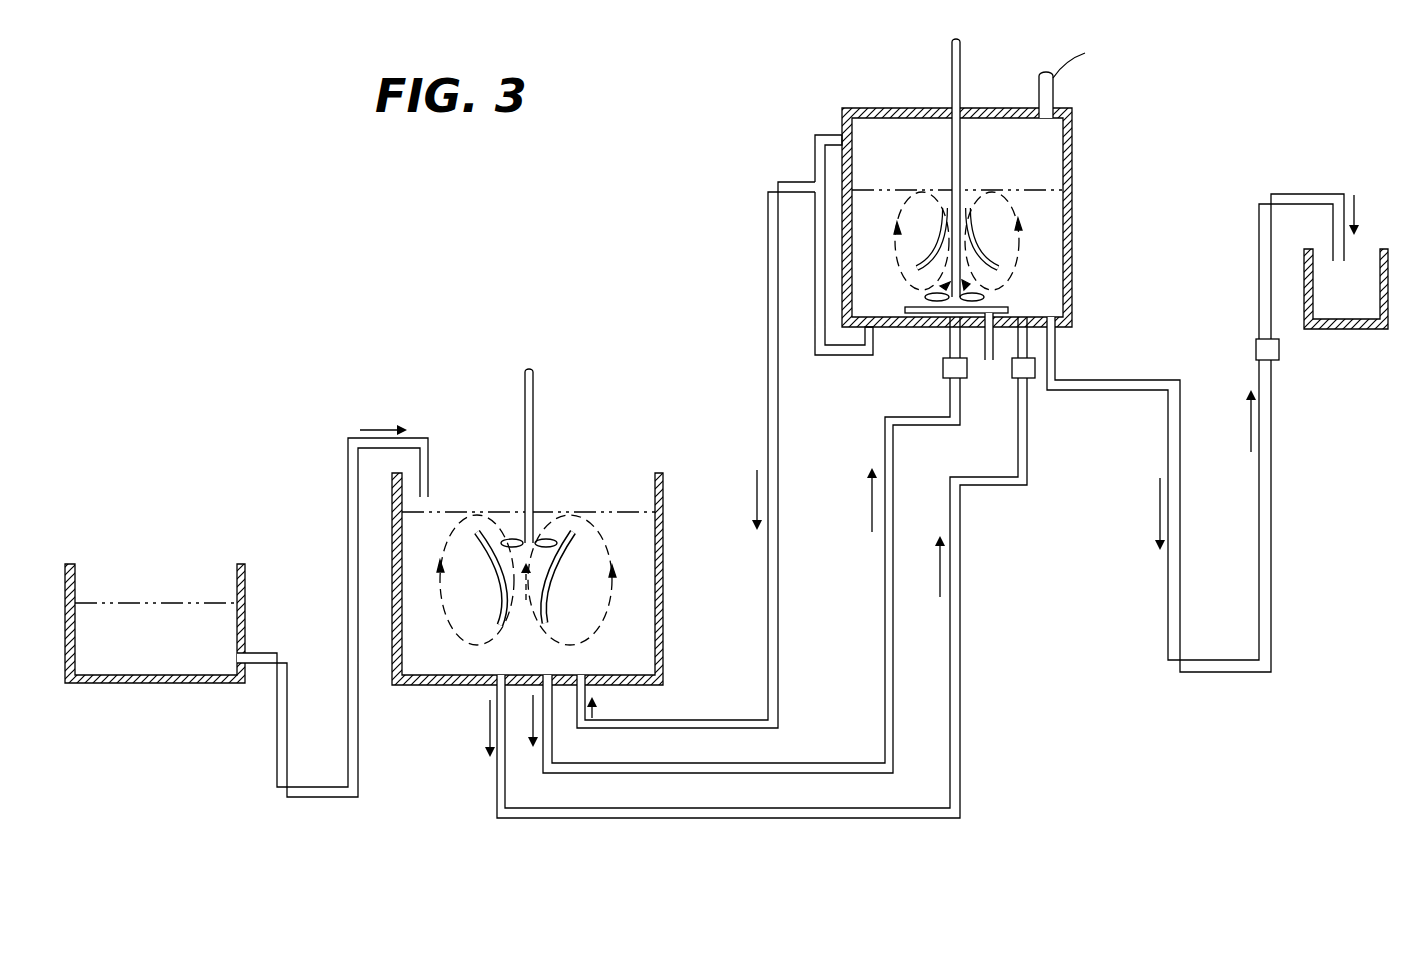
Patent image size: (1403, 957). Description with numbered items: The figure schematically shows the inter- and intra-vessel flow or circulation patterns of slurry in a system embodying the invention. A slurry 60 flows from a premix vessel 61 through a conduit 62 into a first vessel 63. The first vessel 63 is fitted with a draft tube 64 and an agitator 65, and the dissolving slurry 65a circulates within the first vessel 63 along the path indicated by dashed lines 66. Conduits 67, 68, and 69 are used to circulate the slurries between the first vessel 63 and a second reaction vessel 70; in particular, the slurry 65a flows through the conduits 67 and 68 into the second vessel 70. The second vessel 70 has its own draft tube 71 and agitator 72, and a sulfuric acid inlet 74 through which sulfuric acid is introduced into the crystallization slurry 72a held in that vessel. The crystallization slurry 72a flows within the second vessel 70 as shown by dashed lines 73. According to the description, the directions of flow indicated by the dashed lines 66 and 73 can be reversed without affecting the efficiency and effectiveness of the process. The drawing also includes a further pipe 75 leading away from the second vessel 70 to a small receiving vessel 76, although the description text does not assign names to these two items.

The slurry 60 is at (135, 640).
The premix vessel 61 is at (75, 683).
The conduit 62 is at (277, 730).
The first vessel 63 is at (663, 575).
The draft tube 64 is at (572, 545).
The agitator 65 is at (535, 437).
The dissolving slurry 65a is at (625, 617).
The dashed lines 66 is at (597, 620).
The conduit 67 is at (723, 820).
The conduit 68 is at (803, 765).
The conduit 69 is at (773, 670).
The second reaction vessel 70 is at (1072, 172).
The draft tube 71 is at (993, 242).
The agitator 72 is at (952, 62).
The crystallization slurry 72a is at (1043, 303).
The dashed lines 73 is at (1017, 265).
The sulfuric acid inlet 74 is at (988, 365).
The outlet pipe 75 is at (1176, 432).
The receiving tank 76 is at (1380, 272).